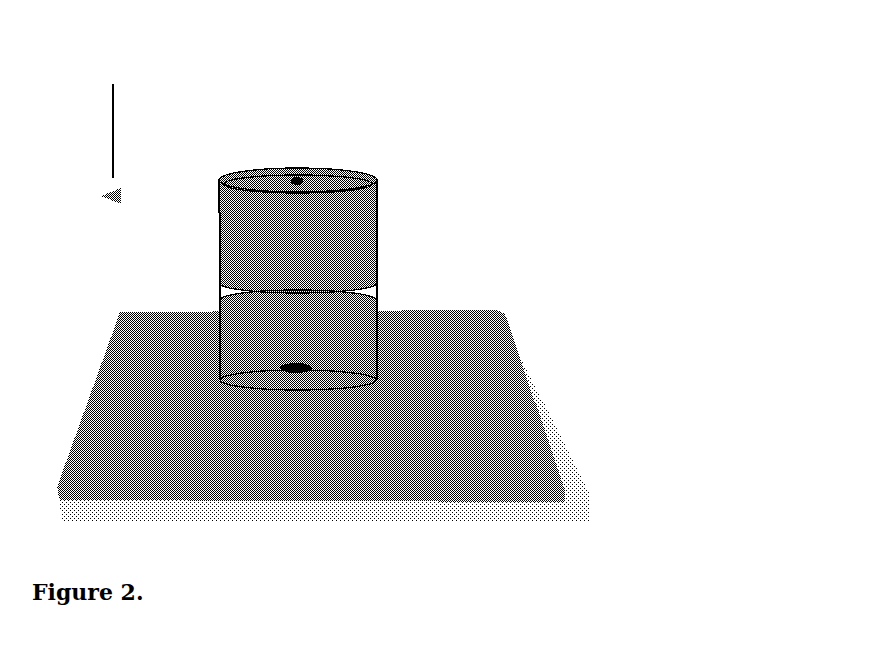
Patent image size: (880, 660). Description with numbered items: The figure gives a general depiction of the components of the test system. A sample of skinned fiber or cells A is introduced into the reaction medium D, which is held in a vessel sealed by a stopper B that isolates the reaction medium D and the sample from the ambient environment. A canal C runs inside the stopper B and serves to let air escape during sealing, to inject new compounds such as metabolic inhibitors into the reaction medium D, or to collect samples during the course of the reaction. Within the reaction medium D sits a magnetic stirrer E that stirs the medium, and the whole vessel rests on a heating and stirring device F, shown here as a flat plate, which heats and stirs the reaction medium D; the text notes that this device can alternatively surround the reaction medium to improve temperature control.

The skinned fiber or cells A is at (111, 129).
The stopper B is at (257, 176).
The canal inside the stopper C is at (292, 176).
The reaction medium D is at (245, 340).
The magnetic stirrer E is at (305, 352).
The heating and stirring device F is at (175, 405).